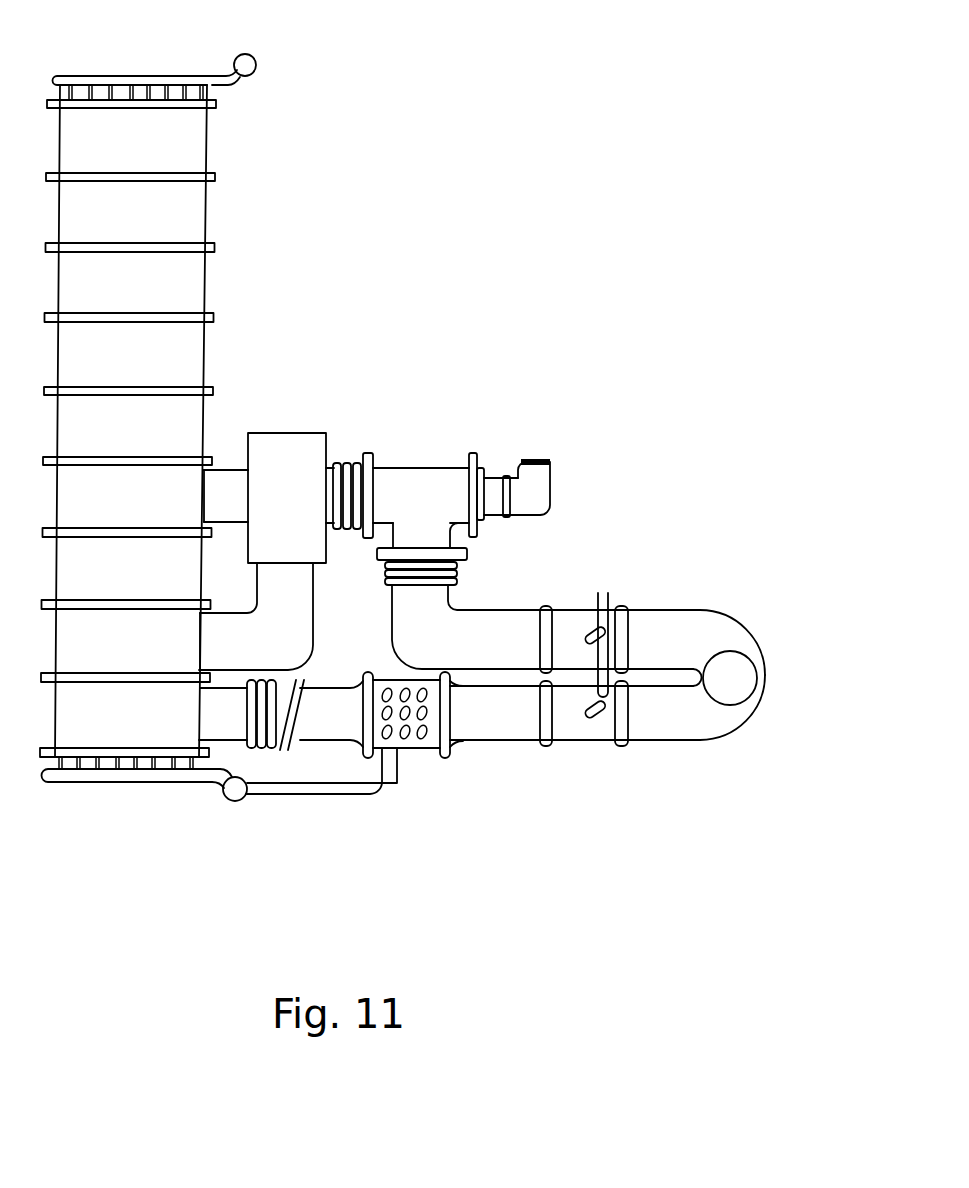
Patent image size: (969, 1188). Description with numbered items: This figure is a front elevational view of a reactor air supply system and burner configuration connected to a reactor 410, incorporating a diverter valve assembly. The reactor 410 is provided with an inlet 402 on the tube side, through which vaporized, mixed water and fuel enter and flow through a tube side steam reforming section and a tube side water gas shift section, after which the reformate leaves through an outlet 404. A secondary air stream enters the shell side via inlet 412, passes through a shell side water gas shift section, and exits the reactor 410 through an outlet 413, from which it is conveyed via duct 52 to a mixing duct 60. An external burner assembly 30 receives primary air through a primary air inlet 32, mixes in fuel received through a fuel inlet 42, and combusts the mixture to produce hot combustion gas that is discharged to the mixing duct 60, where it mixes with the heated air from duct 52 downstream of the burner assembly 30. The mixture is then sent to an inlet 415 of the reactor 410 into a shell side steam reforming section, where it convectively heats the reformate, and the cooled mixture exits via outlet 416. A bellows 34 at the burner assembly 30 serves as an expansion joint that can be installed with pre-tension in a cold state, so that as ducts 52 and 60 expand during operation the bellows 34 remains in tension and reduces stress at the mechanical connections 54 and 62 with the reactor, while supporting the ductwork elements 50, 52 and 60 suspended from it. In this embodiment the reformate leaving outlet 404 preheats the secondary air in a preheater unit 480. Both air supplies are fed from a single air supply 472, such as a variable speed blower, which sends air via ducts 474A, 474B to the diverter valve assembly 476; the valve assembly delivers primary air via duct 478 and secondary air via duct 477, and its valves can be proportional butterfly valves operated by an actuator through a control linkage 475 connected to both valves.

The burner assembly 30 is at (418, 475).
The primary air inlet 32 is at (448, 552).
The bellows 34 is at (342, 457).
The fuel inlet 42 is at (535, 452).
The ductwork element 50 is at (287, 440).
The duct 52 is at (288, 651).
The mechanical connection 54 is at (203, 628).
The mixing duct 60 is at (236, 510).
The mechanical connection 62 is at (209, 483).
The inlet 402 is at (252, 73).
The outlet 404 is at (233, 799).
The reactor 410 is at (230, 281).
The inlet 412 is at (200, 727).
The outlet 413 is at (202, 653).
The inlet 415 is at (203, 507).
The outlet 416 is at (118, 97).
The single air supply 472 is at (746, 696).
The duct 474A is at (717, 637).
The duct 474B is at (677, 728).
The control linkage 475 is at (607, 588).
The diverter valve assembly 476 is at (586, 755).
The duct 477 is at (483, 733).
The duct 478 is at (495, 625).
The preheater unit 480 is at (415, 768).